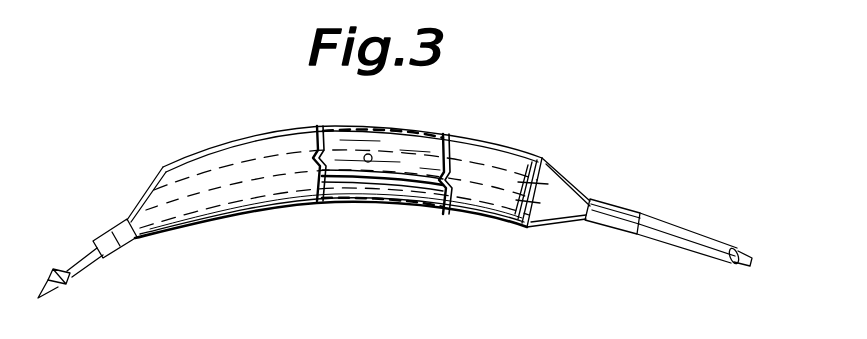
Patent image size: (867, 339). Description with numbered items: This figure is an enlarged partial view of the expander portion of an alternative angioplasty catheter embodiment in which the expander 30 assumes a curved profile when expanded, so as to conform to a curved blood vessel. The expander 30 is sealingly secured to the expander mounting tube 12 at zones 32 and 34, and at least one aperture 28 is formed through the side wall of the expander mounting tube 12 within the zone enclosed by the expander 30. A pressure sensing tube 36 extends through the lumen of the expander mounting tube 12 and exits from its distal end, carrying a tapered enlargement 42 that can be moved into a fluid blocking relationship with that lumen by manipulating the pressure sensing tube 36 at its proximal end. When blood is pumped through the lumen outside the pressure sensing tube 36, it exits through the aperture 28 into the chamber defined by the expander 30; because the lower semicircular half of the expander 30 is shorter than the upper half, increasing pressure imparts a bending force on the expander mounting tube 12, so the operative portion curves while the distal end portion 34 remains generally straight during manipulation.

The expander mounting tube 12 is at (700, 230).
The aperture 28 is at (371, 155).
The expander 30 is at (480, 138).
The sealing zone 32 is at (605, 203).
The sealing zone at distal end portion 34 is at (107, 230).
The pressure sensing tube 36 is at (752, 256).
The tapered enlargement 42 is at (68, 285).